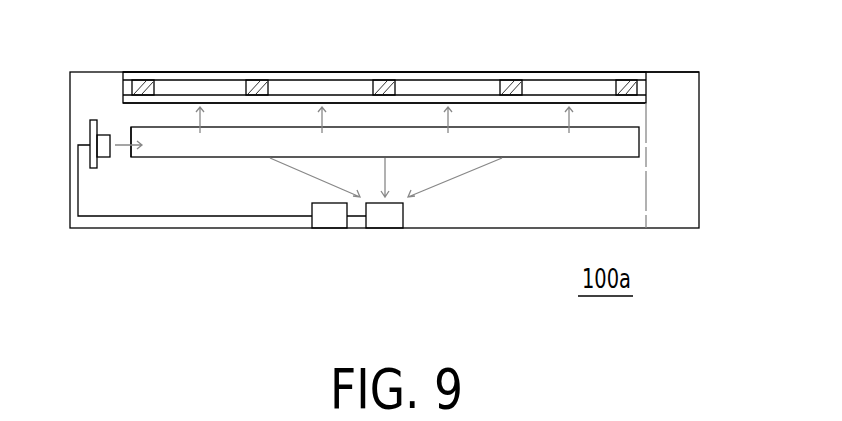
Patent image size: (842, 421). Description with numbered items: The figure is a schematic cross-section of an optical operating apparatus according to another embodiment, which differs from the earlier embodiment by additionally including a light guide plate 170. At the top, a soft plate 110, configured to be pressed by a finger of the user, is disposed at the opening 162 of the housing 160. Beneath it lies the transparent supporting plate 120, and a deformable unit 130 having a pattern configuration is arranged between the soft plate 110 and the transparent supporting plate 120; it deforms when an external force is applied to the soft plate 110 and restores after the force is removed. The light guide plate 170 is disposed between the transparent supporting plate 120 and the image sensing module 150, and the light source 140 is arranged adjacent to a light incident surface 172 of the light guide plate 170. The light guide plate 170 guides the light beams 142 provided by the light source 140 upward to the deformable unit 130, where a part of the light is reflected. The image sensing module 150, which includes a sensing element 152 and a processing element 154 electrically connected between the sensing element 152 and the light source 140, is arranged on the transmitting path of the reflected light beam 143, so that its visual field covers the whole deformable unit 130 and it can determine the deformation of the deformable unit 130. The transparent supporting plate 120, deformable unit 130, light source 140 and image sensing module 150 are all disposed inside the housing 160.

The soft plate 110 is at (313, 76).
The transparent supporting plate 120 is at (642, 98).
The deformable unit 130 is at (626, 92).
The light source 140 is at (96, 121).
The light beams 142 is at (120, 148).
The reflected light beam 143 is at (387, 178).
The image sensing module 150 is at (412, 285).
The sensing element 152 is at (387, 223).
The processing element 154 is at (326, 223).
The housing 160 is at (699, 193).
The opening 162 is at (642, 71).
The light guide plate 170 is at (632, 143).
The light incident surface 172 is at (131, 135).